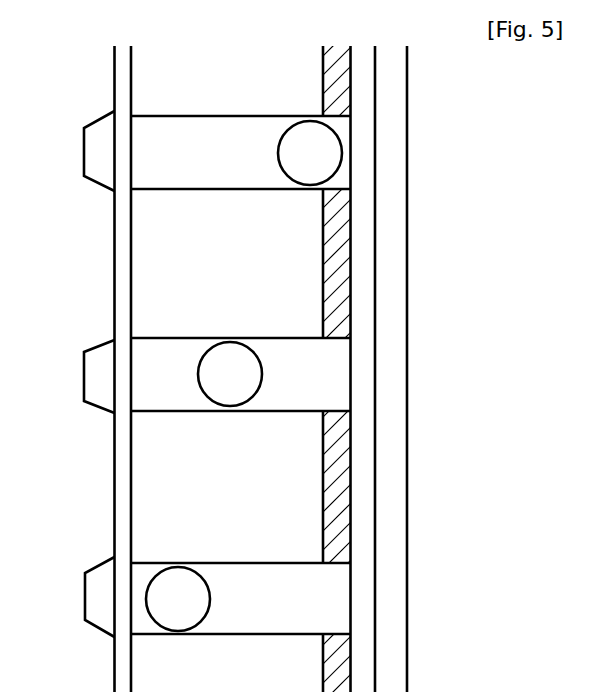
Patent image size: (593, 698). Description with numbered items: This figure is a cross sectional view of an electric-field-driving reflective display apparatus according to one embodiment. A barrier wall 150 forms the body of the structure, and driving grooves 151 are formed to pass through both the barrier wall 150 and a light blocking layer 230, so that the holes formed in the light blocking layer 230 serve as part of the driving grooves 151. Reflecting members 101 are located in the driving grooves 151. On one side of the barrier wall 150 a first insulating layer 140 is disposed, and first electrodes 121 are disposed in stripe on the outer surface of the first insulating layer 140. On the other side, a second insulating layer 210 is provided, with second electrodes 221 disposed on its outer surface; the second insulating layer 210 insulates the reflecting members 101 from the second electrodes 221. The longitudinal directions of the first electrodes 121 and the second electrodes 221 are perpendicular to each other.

The reflecting member 101 is at (342, 157).
The first electrode 121 is at (85, 373).
The first insulating layer 140 is at (138, 262).
The barrier wall 150 is at (303, 295).
The driving groove 151 is at (167, 342).
The second insulating layer 210 is at (368, 132).
The second electrode 221 is at (407, 372).
The light blocking layer 230 is at (350, 241).